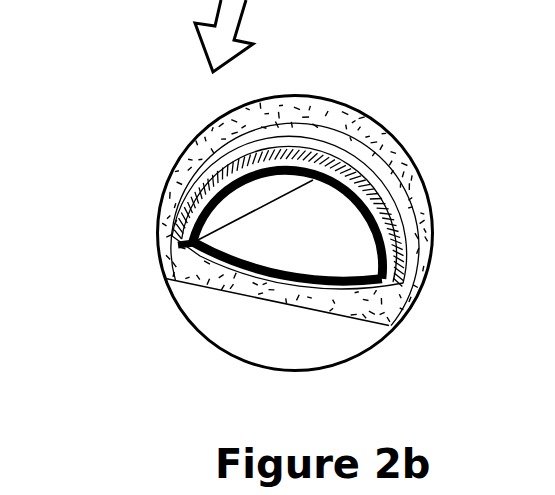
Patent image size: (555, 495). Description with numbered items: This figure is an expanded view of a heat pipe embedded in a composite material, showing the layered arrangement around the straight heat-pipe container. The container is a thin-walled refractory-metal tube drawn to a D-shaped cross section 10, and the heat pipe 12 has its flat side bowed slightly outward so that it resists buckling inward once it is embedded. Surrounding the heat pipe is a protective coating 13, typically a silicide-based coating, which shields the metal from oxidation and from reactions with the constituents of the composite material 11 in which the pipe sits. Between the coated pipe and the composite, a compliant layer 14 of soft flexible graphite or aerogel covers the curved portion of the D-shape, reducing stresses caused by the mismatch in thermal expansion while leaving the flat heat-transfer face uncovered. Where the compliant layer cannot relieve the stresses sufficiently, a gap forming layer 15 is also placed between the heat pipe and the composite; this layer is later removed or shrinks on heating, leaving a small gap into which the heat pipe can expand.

The D-shaped cross section 10 is at (302, 167).
The composite material 11 is at (268, 288).
The heat pipe 12 is at (194, 238).
The coating 13 is at (390, 281).
The compliant layer 14 is at (395, 224).
The gap forming layer 15 is at (185, 182).